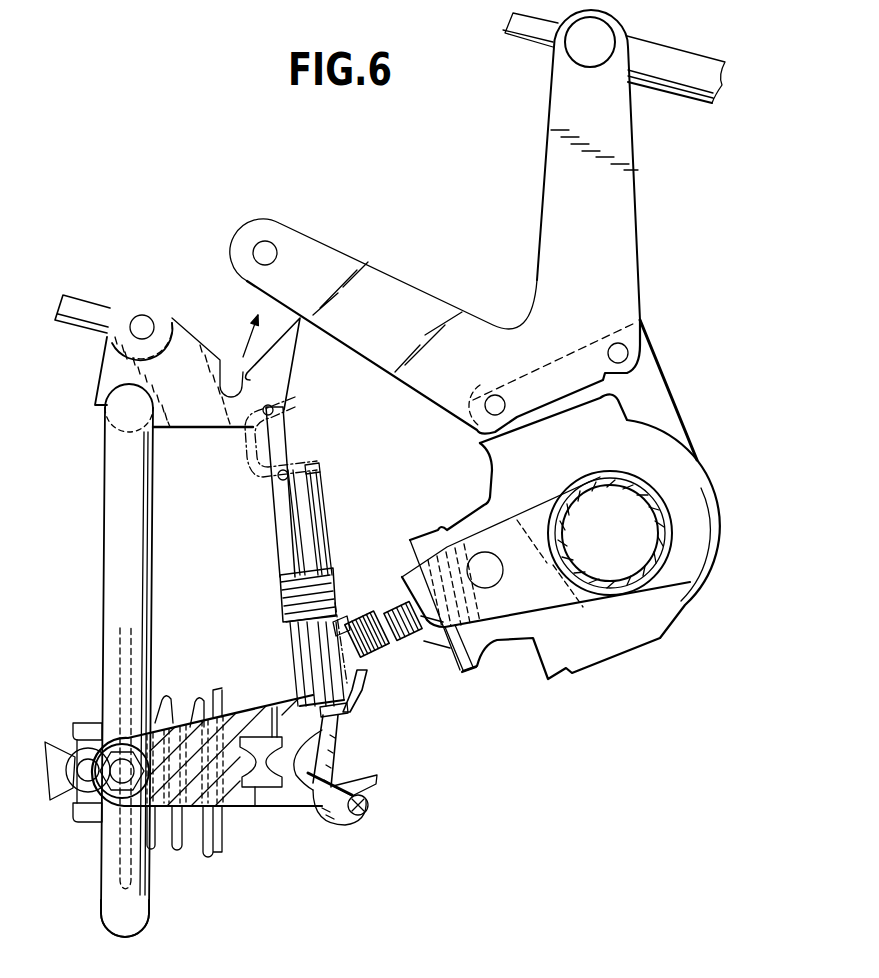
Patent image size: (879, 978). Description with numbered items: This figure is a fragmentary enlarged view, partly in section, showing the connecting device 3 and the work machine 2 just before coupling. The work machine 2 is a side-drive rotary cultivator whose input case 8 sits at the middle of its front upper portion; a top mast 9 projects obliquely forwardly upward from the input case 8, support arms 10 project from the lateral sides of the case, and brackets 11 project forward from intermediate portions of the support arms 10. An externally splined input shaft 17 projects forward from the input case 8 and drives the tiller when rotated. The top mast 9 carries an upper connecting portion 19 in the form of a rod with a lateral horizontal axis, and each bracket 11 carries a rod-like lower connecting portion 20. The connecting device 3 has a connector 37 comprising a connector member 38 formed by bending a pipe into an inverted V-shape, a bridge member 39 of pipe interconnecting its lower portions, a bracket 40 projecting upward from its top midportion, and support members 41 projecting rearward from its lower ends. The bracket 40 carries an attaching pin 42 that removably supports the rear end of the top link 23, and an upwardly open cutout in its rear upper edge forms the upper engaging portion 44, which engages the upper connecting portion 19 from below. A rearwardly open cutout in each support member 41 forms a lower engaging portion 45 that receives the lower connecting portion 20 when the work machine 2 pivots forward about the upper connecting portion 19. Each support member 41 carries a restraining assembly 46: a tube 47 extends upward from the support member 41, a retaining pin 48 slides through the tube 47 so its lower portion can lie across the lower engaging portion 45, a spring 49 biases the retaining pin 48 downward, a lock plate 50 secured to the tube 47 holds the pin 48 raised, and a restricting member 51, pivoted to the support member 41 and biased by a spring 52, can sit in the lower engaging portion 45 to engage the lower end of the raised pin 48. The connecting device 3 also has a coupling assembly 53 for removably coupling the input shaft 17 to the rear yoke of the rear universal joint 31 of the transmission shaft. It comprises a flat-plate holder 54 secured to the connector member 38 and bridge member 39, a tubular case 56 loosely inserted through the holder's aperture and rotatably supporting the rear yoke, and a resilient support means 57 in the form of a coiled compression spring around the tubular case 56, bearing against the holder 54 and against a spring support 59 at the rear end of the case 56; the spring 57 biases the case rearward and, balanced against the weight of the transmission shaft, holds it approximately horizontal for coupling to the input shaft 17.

The work machine 2 is at (500, 150).
The connecting device 3 is at (108, 250).
The input case 8 is at (591, 655).
The top mast 9 is at (407, 293).
The support arms 10 is at (647, 563).
The brackets 11 is at (508, 608).
The input shaft 17 is at (413, 642).
The upper connecting portion 19 is at (276, 250).
The lower connecting portion 20 is at (503, 573).
The top link 23 is at (73, 327).
The rear universal joint 31 is at (77, 720).
The connector 37 is at (104, 556).
The connector member 38 is at (150, 556).
The bridge member 39 is at (143, 912).
The bracket 40 is at (202, 428).
The support members 41 is at (273, 803).
The attaching pin 42 is at (152, 317).
The upper engaging portion 44 is at (250, 372).
The lower engaging portion 45 is at (350, 704).
The restraining assembly 46 is at (328, 526).
The tube 47 is at (338, 625).
The retaining pin 48 is at (266, 507).
The spring 49 is at (312, 578).
The lock plate 50 is at (318, 492).
The restricting member 51 is at (338, 743).
The spring 52 is at (324, 818).
The coupling assembly 53 is at (195, 852).
The holder 54 is at (138, 663).
The tubular case 56 is at (162, 850).
The resilient support means 57 is at (197, 697).
The spring support 59 is at (222, 693).